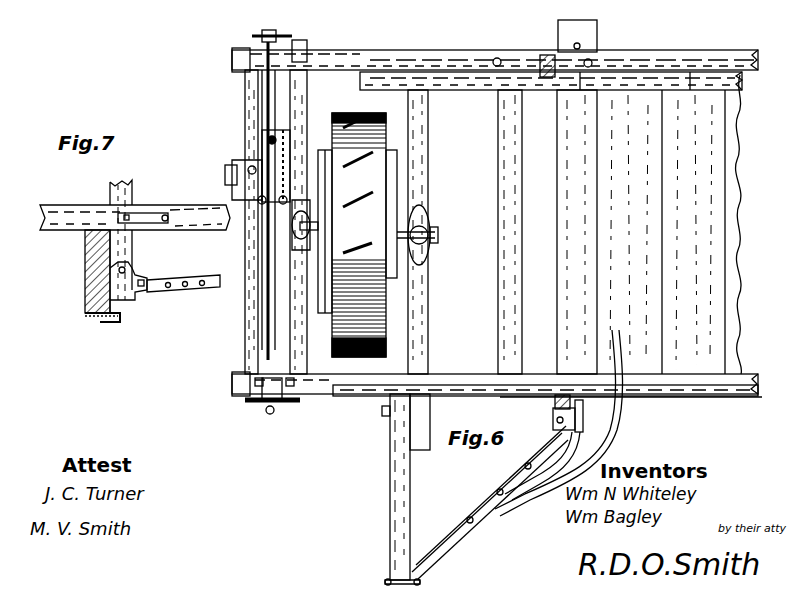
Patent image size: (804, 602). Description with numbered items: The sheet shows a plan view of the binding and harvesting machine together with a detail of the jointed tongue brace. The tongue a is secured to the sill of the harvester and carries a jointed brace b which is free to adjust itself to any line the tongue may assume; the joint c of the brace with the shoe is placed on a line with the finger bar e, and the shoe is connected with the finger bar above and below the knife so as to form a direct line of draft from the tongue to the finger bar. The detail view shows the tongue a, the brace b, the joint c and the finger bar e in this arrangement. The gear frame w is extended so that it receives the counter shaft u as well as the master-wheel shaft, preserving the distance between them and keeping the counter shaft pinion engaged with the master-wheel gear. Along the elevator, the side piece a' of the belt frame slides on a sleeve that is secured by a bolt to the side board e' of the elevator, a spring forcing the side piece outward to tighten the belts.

In FIG. 6, the tongue a is at (406, 489).
In FIG. 7, the tongue a is at (135, 208).
In FIG. 6, the side piece a' is at (547, 234).
In FIG. 6, the jointed brace b is at (490, 502).
In FIG. 7, the jointed brace b is at (183, 275).
In FIG. 6, the joint c is at (560, 415).
In FIG. 7, the joint c is at (140, 282).
In FIG. 6, the finger bar e is at (586, 423).
In FIG. 7, the finger bar e is at (110, 316).
In FIG. 6, the side board e' is at (496, 220).
In FIG. 6, the counter shaft u is at (304, 172).
In FIG. 6, the gear frame w is at (305, 225).